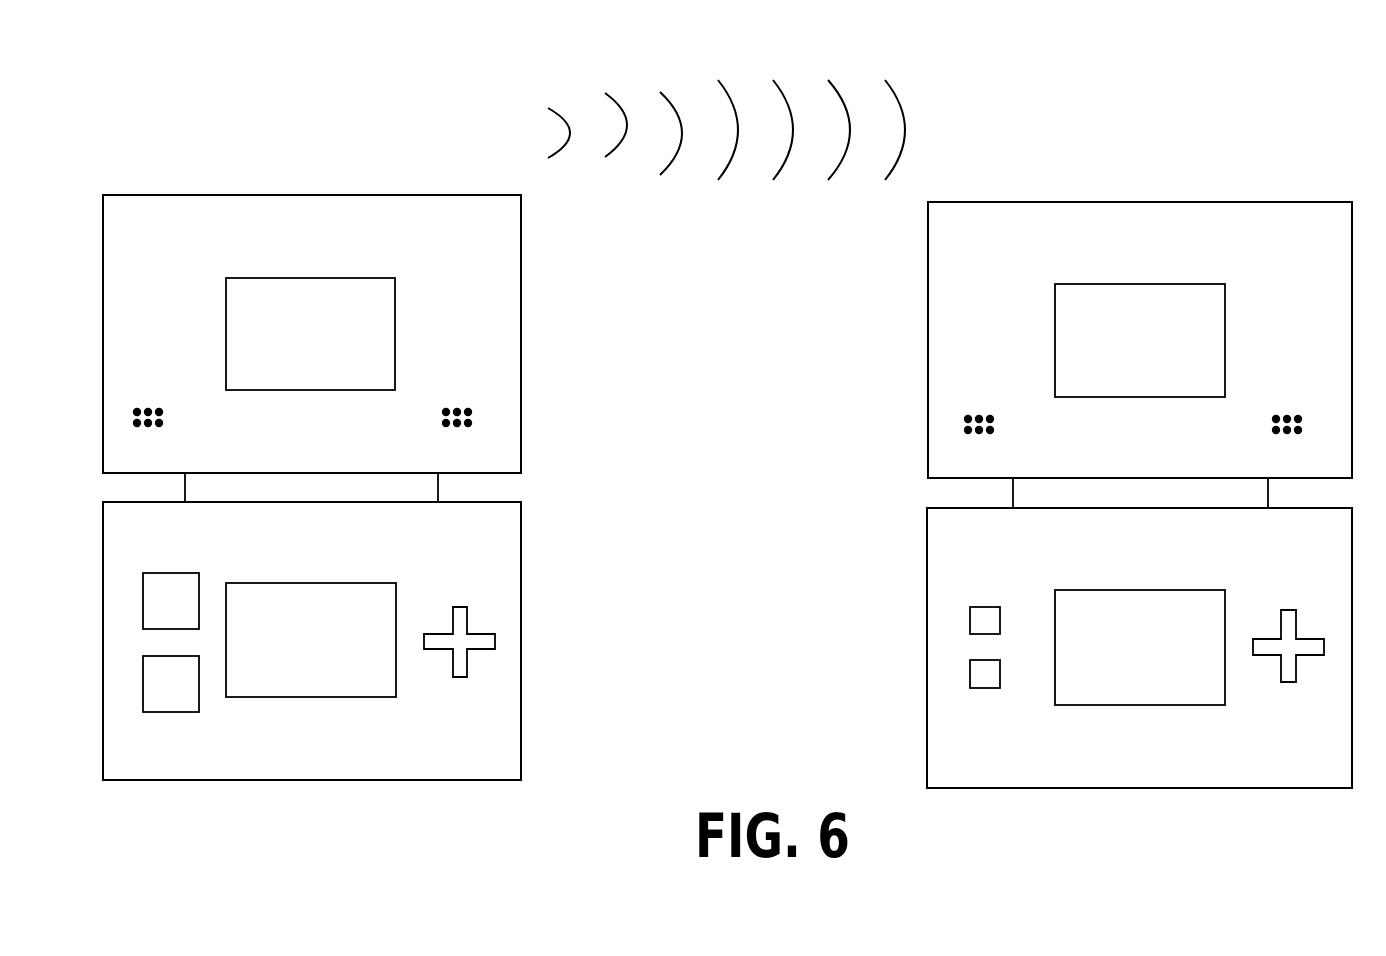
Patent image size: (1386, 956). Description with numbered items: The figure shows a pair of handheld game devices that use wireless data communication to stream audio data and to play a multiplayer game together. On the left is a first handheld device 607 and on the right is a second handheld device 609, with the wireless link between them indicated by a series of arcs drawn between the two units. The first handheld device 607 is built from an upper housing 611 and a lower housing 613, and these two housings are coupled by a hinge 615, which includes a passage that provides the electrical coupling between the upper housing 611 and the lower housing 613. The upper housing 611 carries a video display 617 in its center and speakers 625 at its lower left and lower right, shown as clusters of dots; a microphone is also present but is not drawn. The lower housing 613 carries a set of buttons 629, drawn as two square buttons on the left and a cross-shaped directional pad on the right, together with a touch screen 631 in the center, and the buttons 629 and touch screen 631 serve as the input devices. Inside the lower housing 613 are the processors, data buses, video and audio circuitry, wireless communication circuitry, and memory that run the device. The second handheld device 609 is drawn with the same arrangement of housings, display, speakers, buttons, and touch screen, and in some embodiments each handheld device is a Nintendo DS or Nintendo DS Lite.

The first handheld device 607 is at (294, 162).
The second handheld device 609 is at (1125, 162).
The upper housing 611 is at (521, 334).
The lower housing 613 is at (521, 542).
The hinge 615 is at (438, 486).
The video display 617 is at (330, 343).
The speakers 625 is at (140, 407).
The buttons 629 is at (157, 573).
The touch screen 631 is at (327, 657).